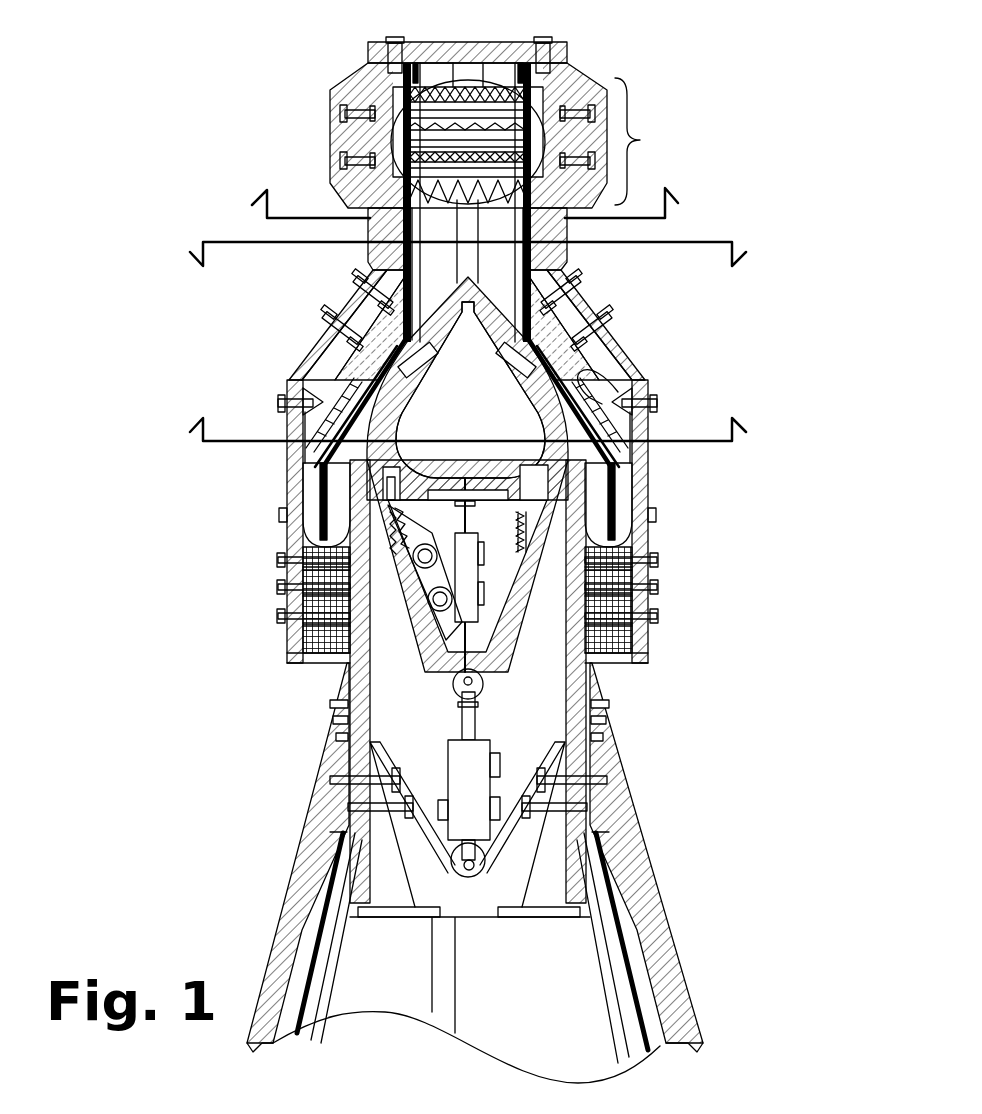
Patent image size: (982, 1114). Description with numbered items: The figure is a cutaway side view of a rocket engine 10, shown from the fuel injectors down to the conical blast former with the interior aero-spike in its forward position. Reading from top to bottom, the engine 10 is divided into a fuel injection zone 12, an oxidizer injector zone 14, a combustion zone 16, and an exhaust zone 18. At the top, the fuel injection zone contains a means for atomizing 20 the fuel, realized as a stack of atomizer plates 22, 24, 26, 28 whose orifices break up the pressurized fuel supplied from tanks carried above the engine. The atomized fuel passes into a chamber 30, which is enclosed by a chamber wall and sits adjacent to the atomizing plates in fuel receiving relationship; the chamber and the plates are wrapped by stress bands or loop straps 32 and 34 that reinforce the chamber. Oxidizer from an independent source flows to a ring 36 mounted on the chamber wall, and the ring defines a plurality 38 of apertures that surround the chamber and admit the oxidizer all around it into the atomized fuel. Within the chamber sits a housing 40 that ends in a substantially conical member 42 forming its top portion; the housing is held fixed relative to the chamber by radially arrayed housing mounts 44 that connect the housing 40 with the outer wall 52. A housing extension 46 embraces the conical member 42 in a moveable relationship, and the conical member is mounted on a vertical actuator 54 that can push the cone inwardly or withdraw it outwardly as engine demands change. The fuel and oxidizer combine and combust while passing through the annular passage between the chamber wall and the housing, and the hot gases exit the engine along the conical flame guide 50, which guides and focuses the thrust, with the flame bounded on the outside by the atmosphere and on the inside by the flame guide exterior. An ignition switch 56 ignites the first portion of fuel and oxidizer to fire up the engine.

The rocket engine 10 is at (283, 690).
The fuel injection zone 12 is at (812, 45).
The oxidizer injector zone 14 is at (812, 293).
The combustion zone 16 is at (812, 470).
The exhaust zone 18 is at (812, 1055).
The means for atomizing 20 is at (632, 140).
The atomizer plate 22 is at (398, 63).
The atomizer plate 24 is at (430, 95).
The atomizer plate 26 is at (433, 117).
The atomizer plate 28 is at (480, 200).
The chamber 30 is at (443, 273).
The stress band 32 is at (368, 235).
The stress band 34 is at (345, 160).
The ring 36 is at (632, 382).
The plurality of apertures 38 is at (638, 375).
The housing 40 is at (413, 727).
The conical member 42 is at (463, 387).
The housing mounts 44 is at (622, 668).
The housing extension 46 is at (370, 478).
The conical flame guide 50 is at (272, 903).
The outer wall 52 is at (652, 572).
The vertical actuator 54 is at (440, 792).
The ignition switch 56 is at (284, 516).